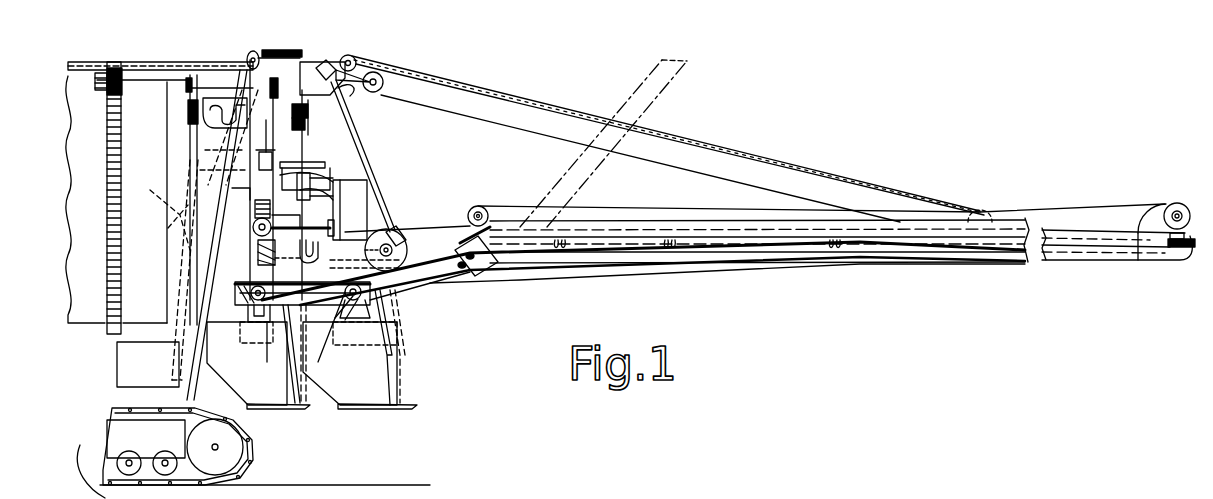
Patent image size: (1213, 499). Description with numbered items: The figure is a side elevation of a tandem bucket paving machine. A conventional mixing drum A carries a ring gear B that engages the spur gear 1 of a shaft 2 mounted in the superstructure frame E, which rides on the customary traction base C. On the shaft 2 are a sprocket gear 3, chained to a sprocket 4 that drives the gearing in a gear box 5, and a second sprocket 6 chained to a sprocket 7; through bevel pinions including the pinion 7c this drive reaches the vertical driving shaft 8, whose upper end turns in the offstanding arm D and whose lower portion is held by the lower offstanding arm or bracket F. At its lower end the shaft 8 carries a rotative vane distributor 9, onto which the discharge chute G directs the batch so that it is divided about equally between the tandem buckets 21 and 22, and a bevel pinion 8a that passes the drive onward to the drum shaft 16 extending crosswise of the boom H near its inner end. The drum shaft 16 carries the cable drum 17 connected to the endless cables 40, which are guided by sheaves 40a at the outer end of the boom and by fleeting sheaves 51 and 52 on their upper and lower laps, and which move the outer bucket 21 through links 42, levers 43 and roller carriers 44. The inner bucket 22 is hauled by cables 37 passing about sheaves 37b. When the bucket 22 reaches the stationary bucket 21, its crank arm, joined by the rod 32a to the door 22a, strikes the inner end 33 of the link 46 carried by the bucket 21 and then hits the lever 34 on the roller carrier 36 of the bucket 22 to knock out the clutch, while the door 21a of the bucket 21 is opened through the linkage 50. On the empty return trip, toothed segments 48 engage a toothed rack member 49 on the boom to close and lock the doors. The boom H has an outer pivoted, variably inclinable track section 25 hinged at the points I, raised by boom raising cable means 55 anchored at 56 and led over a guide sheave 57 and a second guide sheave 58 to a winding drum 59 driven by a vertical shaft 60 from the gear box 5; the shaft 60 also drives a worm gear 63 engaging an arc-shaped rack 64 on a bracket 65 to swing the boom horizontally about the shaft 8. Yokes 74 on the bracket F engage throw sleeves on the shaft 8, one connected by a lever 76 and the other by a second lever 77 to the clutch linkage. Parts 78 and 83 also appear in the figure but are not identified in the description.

The spur gear 1 is at (114, 72).
The shaft 2 is at (150, 78).
The sprocket gear 3 is at (205, 80).
The sprocket 4 is at (192, 118).
The gear box 5 is at (229, 137).
The second sprocket 6 is at (280, 50).
The sprocket 7 is at (322, 66).
The bevel pinion 7c is at (308, 110).
The vertical driving shaft 8 is at (276, 180).
The bevel pinion 8a is at (268, 265).
The distributor 9 is at (300, 265).
The drum shaft 16 is at (410, 228).
The cable drum 17 is at (392, 236).
The outer bucket 21 is at (372, 393).
The door 21a is at (374, 409).
The inner bucket 22 is at (243, 387).
The door 22a is at (287, 408).
The outer pivoted track section 25 is at (602, 238).
The rod 32a is at (291, 368).
The inner end of link 33 is at (318, 318).
The lever 34 is at (247, 363).
The roller carrier 36 is at (238, 303).
The cables 37 is at (1110, 246).
The sheaves 37b is at (1186, 250).
The cables 40 is at (474, 210).
The sheaves 40a is at (1178, 203).
The links 42 is at (400, 293).
The levers 43 is at (323, 347).
The roller carriers 44 is at (340, 318).
The link 46 is at (380, 322).
The toothed segments 48 is at (422, 318).
The toothed rack member 49 is at (482, 275).
The linkage 50 is at (401, 350).
The fleeting sheaves 51 is at (490, 213).
The fleeting sheaves 52 is at (515, 282).
The boom raising cable instrumentalities 55 is at (555, 113).
The anchoring means 56 is at (385, 76).
The guide sheave 57 is at (292, 56).
The second guide sheave 58 is at (256, 54).
The winding drum 59 is at (247, 218).
The vertical shaft 60 is at (268, 140).
The worm gear 63 is at (258, 232).
The arc-shaped rack 64 is at (272, 228).
The bracket 65 is at (278, 232).
The yokes 74 is at (296, 168).
The lever 76 is at (362, 175).
The second lever 77 is at (395, 174).
The block 78 is at (306, 124).
The guide 83 is at (365, 273).
The mixing drum A is at (95, 312).
The ring gear B is at (120, 230).
The traction base C is at (150, 440).
The offstanding arm D is at (351, 83).
The superstructure frame E is at (200, 62).
The lower offstanding arm F is at (356, 225).
The discharge chute G is at (165, 270).
The boom H is at (396, 250).
The hinge points I is at (538, 226).